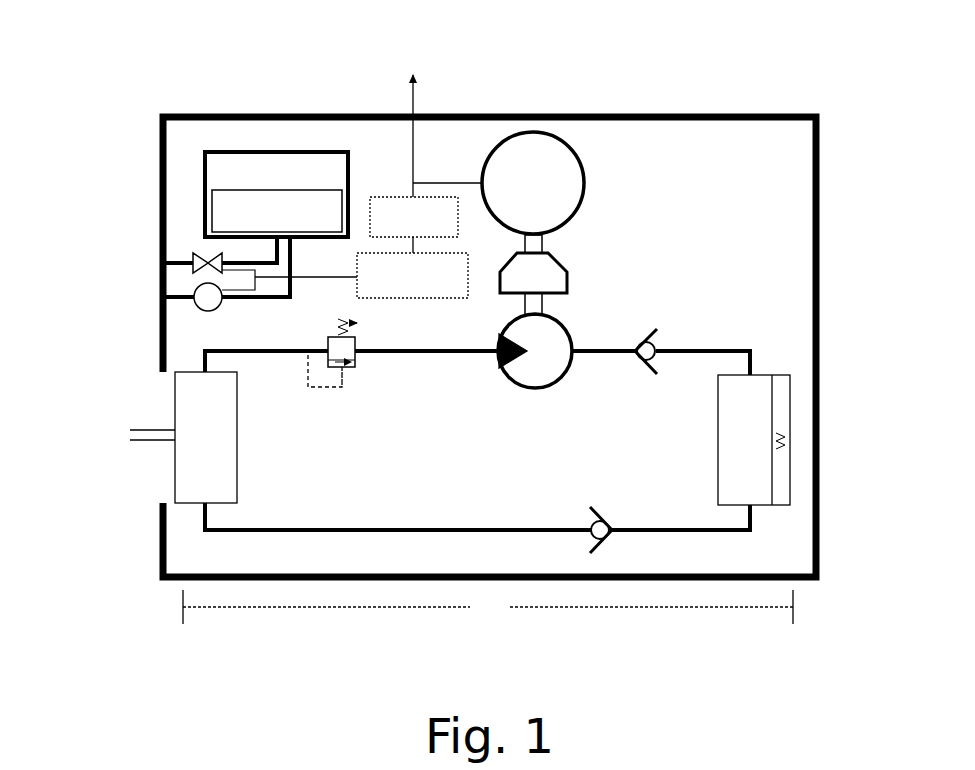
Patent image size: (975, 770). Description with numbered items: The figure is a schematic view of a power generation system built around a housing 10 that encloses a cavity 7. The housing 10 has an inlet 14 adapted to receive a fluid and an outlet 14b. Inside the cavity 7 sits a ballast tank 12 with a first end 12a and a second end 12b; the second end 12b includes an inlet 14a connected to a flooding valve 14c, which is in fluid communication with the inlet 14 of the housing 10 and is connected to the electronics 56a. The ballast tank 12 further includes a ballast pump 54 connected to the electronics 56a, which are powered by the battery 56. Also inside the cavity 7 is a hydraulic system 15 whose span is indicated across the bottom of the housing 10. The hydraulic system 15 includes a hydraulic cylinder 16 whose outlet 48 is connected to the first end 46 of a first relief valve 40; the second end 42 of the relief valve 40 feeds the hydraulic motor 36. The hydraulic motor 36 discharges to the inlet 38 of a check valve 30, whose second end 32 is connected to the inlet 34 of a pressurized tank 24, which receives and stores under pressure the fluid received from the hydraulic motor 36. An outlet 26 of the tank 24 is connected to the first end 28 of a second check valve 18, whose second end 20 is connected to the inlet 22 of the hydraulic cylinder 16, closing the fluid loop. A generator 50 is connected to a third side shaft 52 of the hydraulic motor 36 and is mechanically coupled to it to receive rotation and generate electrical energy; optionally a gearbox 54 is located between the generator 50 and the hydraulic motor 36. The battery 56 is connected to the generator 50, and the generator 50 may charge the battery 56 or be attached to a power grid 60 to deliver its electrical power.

The cavity 7 is at (780, 203).
The housing 10 is at (762, 110).
The ballast tank 12 is at (303, 150).
The first end 12a is at (335, 150).
The second end 12b is at (298, 245).
The inlet 14 is at (152, 263).
The inlet 14a is at (268, 244).
The outlet 14b is at (150, 297).
The flooding valve 14c is at (190, 253).
The hydraulic system 15 is at (488, 607).
The hydraulic cylinder 16 is at (170, 465).
The second check valve 18 is at (605, 502).
The second end 20 is at (588, 520).
The inlet 22 is at (203, 508).
The pressurized tank 24 is at (795, 415).
The outlet 26 is at (755, 515).
The first end 28 is at (617, 523).
The check valve 30 is at (668, 324).
The second end 32 is at (656, 344).
The inlet 34 is at (758, 368).
The hydraulic motor 36 is at (532, 392).
The inlet 38 is at (630, 343).
The first relief valve 40 is at (384, 363).
The second end 42 is at (359, 342).
The first end 46 is at (323, 340).
The outlet 48 is at (200, 371).
The generator 50 is at (590, 188).
The third side shaft 52 is at (548, 310).
The gearbox / ballast pump 54 is at (207, 313).
The battery 56 is at (462, 218).
The electronics 56a is at (427, 305).
The power grid 60 is at (397, 68).